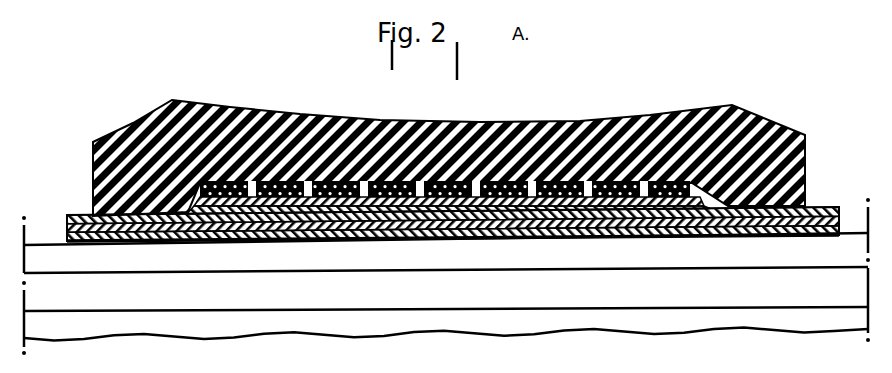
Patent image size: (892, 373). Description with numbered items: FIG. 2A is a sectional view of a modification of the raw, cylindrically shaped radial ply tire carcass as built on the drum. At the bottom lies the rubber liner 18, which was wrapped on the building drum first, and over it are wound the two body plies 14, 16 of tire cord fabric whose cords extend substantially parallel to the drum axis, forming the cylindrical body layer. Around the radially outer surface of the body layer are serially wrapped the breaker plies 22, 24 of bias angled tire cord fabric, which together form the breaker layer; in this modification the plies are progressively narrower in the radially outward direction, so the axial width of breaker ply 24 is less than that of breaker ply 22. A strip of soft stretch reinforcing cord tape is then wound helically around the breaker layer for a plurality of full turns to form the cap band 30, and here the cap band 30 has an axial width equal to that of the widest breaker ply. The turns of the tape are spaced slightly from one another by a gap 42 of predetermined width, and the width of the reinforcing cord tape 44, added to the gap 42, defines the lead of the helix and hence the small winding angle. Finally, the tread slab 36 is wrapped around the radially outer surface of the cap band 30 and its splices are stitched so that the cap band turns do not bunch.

The body ply 14 is at (478, 238).
The body ply 16 is at (442, 238).
The rubber liner 18 is at (515, 238).
The breaker ply 22 is at (403, 238).
The breaker ply 24 is at (355, 238).
The cap band 30 is at (530, 182).
The tread slab 36 is at (503, 122).
The gap 42 is at (427, 188).
The width of the reinforcing cord tape 44 is at (302, 190).